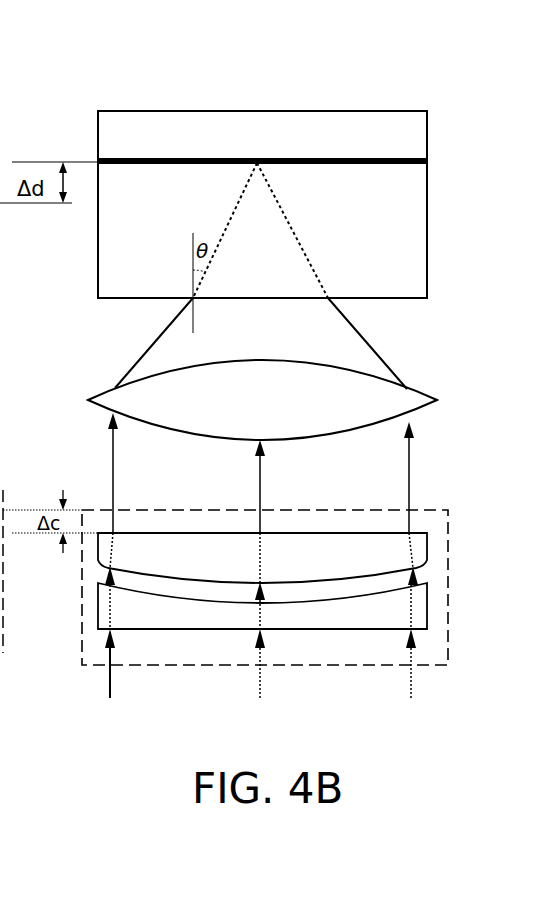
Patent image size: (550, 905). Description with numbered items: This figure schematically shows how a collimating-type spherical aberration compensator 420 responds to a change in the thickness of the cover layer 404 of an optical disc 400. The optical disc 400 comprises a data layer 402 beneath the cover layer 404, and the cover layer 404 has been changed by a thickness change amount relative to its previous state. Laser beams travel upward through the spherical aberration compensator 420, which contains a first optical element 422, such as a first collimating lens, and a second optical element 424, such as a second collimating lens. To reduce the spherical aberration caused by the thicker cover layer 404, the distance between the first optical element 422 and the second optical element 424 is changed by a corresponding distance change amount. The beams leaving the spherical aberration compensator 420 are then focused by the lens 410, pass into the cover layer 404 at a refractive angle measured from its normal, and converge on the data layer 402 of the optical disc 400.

The optical disc 400 is at (311, 86).
The data layer 402 is at (403, 156).
The cover layer 404 is at (420, 252).
The lens 410 is at (418, 398).
The collimating-type spherical aberration compensator 420 is at (428, 511).
The first optical element 422 is at (418, 556).
The second optical element 424 is at (422, 612).